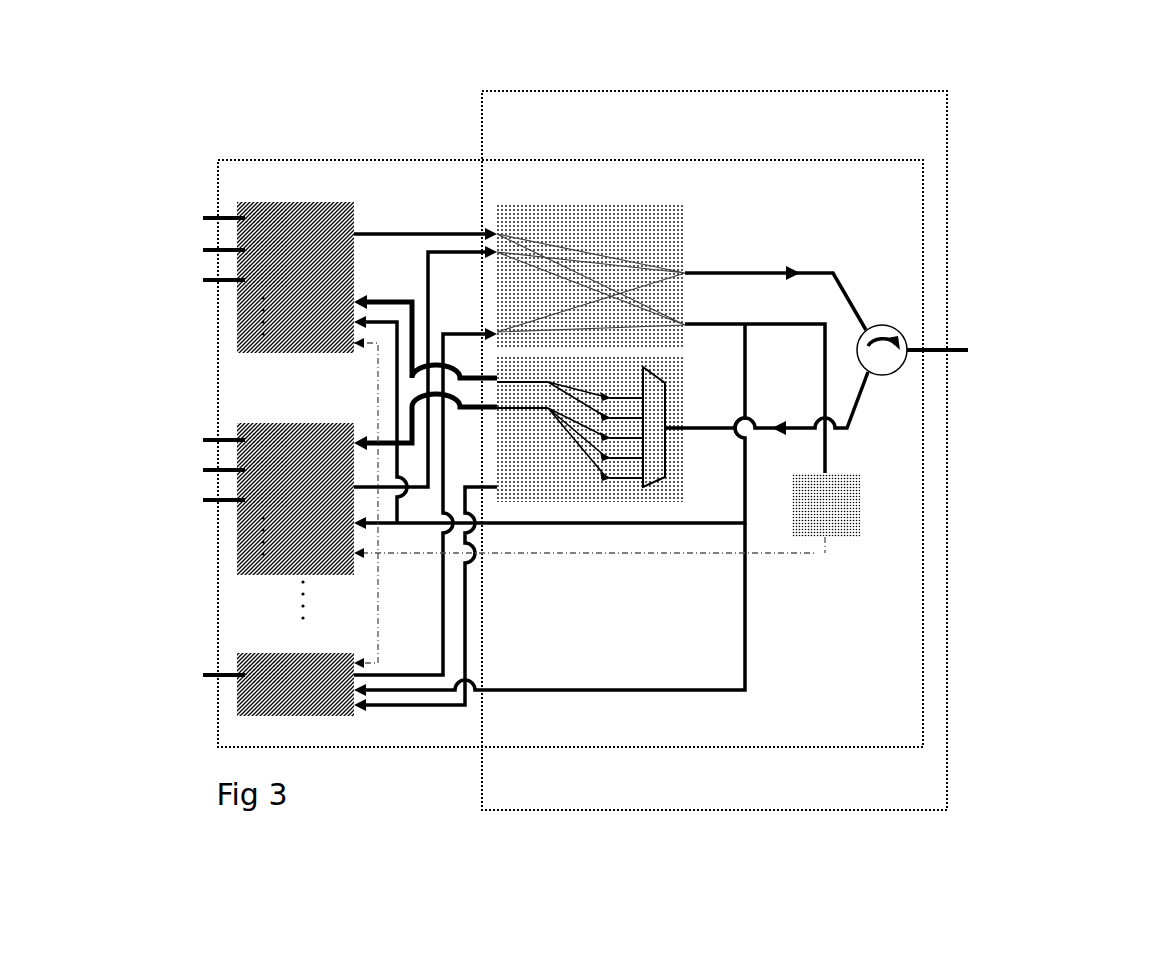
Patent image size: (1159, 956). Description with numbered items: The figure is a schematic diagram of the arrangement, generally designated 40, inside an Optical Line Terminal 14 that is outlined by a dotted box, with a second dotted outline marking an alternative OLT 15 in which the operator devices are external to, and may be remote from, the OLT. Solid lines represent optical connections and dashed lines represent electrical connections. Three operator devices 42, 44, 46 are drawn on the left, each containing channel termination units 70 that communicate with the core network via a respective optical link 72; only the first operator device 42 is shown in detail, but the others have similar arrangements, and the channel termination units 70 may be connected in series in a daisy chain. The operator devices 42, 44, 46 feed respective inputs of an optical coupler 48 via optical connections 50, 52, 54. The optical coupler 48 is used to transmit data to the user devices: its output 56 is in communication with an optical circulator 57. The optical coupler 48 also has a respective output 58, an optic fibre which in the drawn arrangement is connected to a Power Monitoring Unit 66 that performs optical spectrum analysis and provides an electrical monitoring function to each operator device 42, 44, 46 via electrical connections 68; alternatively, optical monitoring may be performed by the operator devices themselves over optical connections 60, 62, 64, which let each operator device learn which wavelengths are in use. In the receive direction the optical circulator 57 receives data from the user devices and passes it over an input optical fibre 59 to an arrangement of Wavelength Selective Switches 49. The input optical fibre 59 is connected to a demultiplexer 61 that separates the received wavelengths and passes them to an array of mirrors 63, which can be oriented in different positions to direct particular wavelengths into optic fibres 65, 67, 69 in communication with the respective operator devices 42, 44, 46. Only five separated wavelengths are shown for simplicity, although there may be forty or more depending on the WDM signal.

The Optical Line Terminal 14 is at (923, 690).
The OLT 15 is at (946, 757).
The arrangement 40 is at (976, 86).
The operator device 42 is at (237, 330).
The operator device 44 is at (237, 565).
The operator device 46 is at (237, 712).
The optical coupler 48 is at (608, 203).
The arrangement of Wavelength Selective Switches 49 is at (688, 370).
The optical connection 50 is at (458, 232).
The optical connection 52 is at (433, 250).
The optical connection 54 is at (478, 332).
The output 56 is at (722, 272).
The optical circulator 57 is at (905, 372).
The output 58 is at (728, 324).
The input optical fibre 59 is at (718, 430).
The optical connection 60 is at (363, 325).
The demultiplexer 61 is at (648, 487).
The optical connection 62 is at (525, 526).
The array of mirrors 63 is at (612, 488).
The optical connection 64 is at (714, 692).
The optic fibre 65 is at (370, 300).
The Power Monitoring Unit 66 is at (860, 525).
The optic fibre 67 is at (372, 443).
The electrical connections 68 is at (775, 556).
The optic fibre 69 is at (398, 708).
The channel termination unit 70 is at (272, 208).
The optical link 72 is at (238, 222).